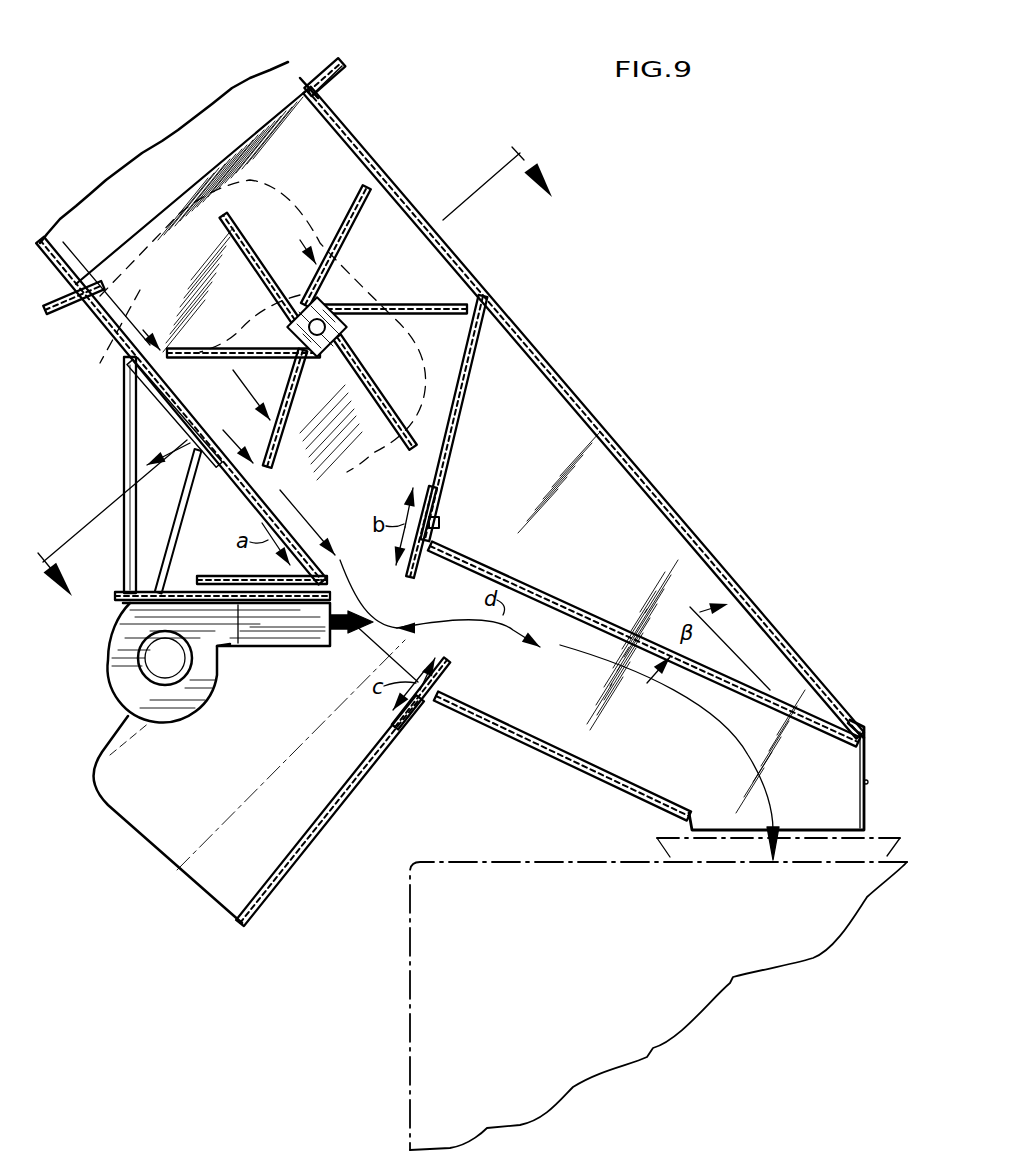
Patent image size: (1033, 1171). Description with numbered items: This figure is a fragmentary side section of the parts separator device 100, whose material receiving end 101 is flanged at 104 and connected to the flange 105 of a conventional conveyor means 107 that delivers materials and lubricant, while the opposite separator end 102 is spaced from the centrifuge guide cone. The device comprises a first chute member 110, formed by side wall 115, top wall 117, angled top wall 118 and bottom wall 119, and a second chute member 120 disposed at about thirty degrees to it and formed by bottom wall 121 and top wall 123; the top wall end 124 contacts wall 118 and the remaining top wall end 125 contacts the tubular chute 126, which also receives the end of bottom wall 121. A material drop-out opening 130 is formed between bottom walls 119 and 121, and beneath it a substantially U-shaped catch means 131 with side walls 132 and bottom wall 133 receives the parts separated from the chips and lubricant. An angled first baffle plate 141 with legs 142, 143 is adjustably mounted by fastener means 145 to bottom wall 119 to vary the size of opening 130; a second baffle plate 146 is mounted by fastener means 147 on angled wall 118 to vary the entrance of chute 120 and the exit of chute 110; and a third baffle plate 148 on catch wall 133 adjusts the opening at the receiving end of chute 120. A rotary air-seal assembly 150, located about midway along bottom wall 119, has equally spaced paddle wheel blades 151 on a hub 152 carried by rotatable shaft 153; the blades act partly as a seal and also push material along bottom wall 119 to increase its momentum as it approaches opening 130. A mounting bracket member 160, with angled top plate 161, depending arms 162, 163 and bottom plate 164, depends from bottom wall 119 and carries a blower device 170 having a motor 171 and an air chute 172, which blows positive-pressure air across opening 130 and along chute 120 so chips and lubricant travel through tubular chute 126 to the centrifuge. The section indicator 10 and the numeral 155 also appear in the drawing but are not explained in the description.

The section line 10 is at (301, 379).
The parts separator device 100 is at (560, 388).
The material receiving end 101 is at (300, 100).
The separator end 102 is at (822, 832).
The flange 104 is at (346, 72).
The conveyor flange 105 is at (335, 62).
The conveyor means 107 is at (307, 88).
The first chute member 110 is at (380, 170).
The side wall 115 is at (452, 263).
The top wall 117 is at (372, 143).
The angled top wall 118 is at (460, 402).
The bottom wall 119 is at (84, 312).
The second chute member 120 is at (550, 742).
The bottom wall 121 is at (622, 790).
The top wall 123 is at (528, 586).
The top wall end 124 is at (432, 540).
The top wall end 125 is at (850, 715).
The tubular chute 126 is at (860, 782).
The material drop-out opening 130 is at (395, 652).
The catch means 131 is at (292, 864).
The side walls 132 is at (148, 838).
The bottom wall 133 is at (347, 803).
The first baffle plate 141 is at (258, 600).
The angled leg 142 is at (230, 577).
The angled leg 143 is at (308, 525).
The fastener means 145 is at (262, 516).
The second baffle plate 146 is at (411, 580).
The fastener means 147 is at (408, 498).
The third baffle plate 148 is at (448, 679).
The rotary air-seal assembly 150 is at (317, 326).
The paddle wheel blades 151 is at (358, 222).
The hub 152 is at (340, 346).
The rotatable shaft 153 is at (350, 302).
The sweep envelope 155 is at (98, 362).
The mounting bracket member 160 is at (119, 464).
The angled top plate 161 is at (121, 430).
The depending arm 162 is at (121, 392).
The depending arm 163 is at (176, 535).
The bottom plate 164 is at (118, 604).
The blower device 170 is at (220, 695).
The motor 171 is at (165, 670).
The air chute 172 is at (240, 648).